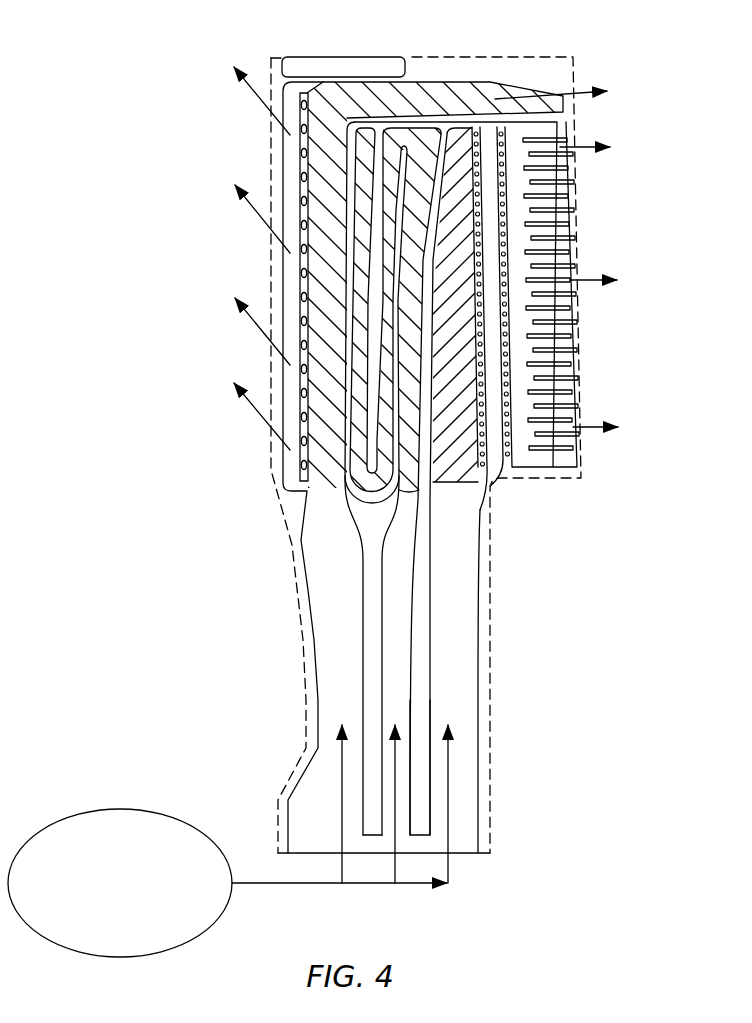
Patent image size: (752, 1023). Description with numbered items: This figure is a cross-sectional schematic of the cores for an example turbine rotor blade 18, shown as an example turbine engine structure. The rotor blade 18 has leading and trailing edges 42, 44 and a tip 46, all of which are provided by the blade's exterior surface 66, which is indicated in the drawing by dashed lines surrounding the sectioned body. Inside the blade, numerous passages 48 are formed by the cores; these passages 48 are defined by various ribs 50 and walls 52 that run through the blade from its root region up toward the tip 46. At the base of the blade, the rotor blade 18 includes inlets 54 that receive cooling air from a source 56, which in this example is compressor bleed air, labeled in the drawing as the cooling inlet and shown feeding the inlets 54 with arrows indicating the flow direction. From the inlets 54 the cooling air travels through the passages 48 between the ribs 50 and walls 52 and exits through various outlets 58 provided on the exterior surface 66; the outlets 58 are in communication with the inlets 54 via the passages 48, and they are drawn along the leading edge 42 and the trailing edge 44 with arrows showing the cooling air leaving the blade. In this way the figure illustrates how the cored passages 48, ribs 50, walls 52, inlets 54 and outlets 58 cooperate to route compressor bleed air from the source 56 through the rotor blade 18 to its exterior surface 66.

The turbine rotor blade 18 is at (635, 226).
The leading edge 42 is at (270, 373).
The trailing edge 44 is at (582, 367).
The tip 46 is at (346, 77).
The passages 48 is at (315, 560).
The ribs 50 is at (420, 625).
The walls 52 is at (478, 745).
The inlets 54 is at (447, 835).
The compressor bleed air (cooling inlet) 56 is at (98, 810).
The outlets 58 is at (300, 311).
The exterior surface 66 is at (492, 644).